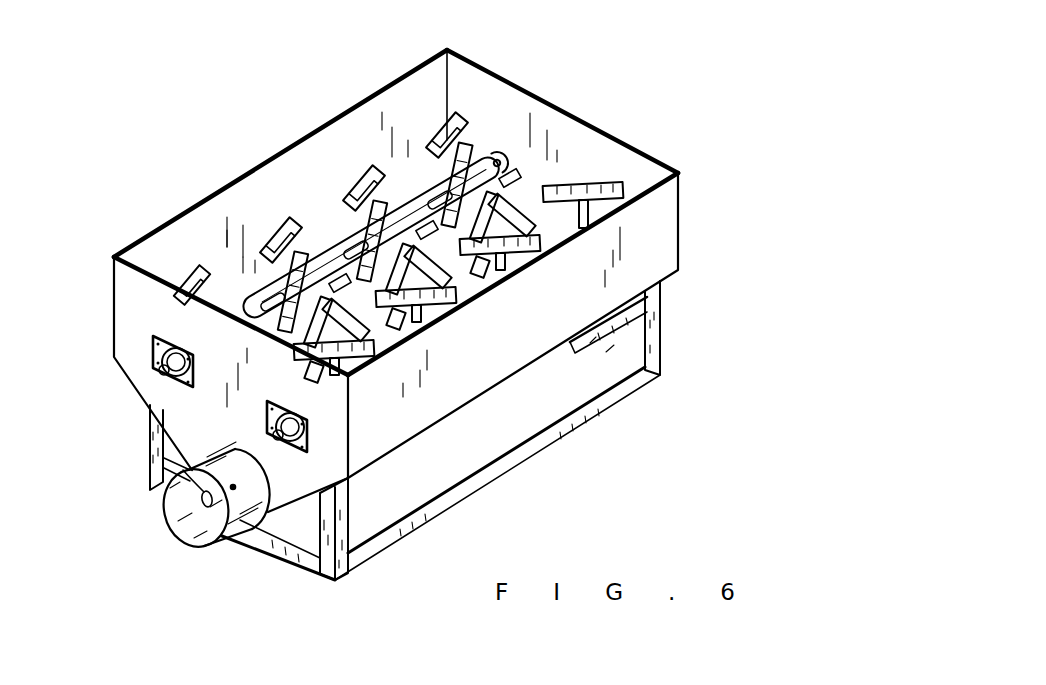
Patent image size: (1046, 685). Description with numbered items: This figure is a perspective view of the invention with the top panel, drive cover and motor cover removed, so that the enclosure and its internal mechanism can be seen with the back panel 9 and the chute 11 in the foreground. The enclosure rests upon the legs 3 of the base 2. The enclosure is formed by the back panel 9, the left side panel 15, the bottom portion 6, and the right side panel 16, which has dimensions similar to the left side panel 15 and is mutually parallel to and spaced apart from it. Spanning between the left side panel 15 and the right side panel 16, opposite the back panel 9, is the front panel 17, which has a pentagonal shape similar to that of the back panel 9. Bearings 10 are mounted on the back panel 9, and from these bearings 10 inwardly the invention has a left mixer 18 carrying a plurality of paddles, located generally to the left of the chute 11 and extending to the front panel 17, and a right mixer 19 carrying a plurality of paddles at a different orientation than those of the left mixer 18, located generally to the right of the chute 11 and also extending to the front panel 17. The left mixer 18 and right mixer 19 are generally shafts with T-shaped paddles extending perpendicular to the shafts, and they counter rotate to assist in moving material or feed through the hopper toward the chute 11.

The base 2 is at (533, 460).
The legs 3 is at (658, 318).
The rotor shaft with paddles 6 is at (305, 292).
The back panel 9 is at (147, 307).
The bearings 10 is at (153, 370).
The chute 11 is at (200, 543).
The left side panel 15 is at (317, 180).
The right side panel 16 is at (593, 267).
The front panel 17 is at (552, 150).
The left mixer 18 is at (480, 163).
The right mixer 19 is at (570, 220).